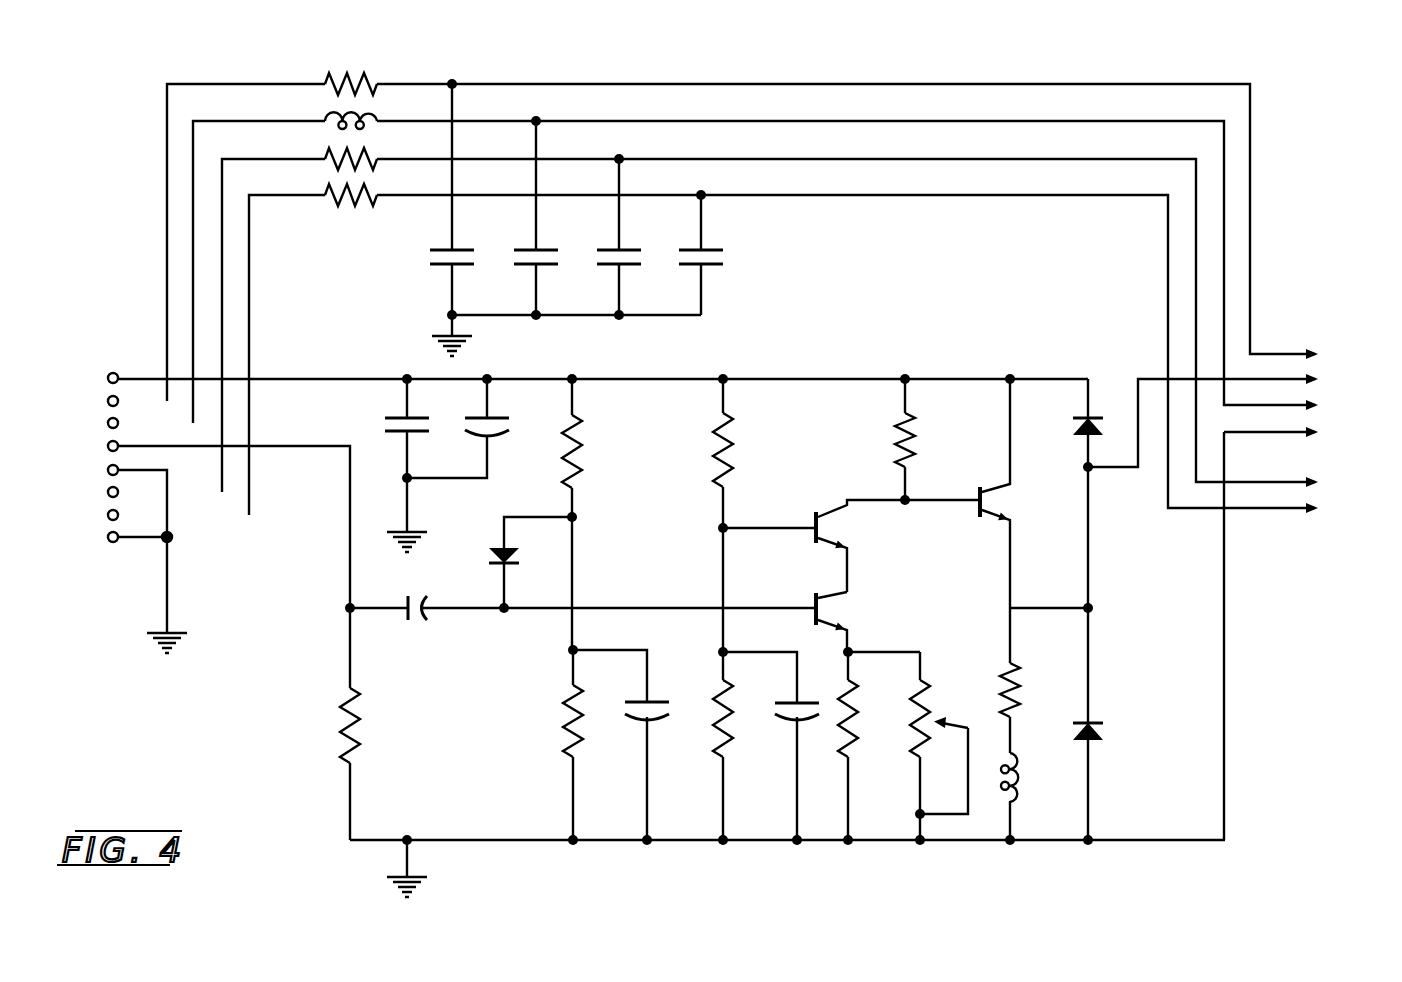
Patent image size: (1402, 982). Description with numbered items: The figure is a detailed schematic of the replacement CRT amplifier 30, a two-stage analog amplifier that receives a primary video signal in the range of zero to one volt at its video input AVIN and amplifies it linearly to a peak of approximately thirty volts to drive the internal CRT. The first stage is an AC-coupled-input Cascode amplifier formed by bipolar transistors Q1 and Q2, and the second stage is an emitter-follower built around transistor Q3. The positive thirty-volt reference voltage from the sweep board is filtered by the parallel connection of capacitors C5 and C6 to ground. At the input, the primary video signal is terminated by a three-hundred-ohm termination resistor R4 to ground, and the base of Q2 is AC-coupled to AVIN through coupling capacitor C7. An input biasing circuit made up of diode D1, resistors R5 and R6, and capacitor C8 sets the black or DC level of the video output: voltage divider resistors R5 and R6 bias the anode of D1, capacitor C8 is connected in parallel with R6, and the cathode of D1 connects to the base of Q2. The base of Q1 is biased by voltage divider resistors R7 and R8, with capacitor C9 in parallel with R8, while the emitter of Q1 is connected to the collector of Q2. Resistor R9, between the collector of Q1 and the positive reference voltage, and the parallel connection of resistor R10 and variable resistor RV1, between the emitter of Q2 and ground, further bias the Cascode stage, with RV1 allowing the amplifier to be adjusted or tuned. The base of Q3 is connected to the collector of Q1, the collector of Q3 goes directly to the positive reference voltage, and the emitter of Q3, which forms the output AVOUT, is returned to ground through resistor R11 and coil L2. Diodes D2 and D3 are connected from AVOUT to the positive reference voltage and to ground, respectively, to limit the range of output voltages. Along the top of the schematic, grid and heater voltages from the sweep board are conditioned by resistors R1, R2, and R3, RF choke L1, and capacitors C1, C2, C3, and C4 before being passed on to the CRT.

The replacement CRT amplifier 30 is at (732, 78).
The resistor R1 is at (741, 231).
The RF choke L1 is at (754, 260).
The resistor R2 is at (768, 314).
The resistor R3 is at (782, 344).
The capacitor C1 is at (446, 199).
The capacitor C2 is at (529, 218).
The capacitor C3 is at (612, 237).
The capacitor C4 is at (694, 255).
The capacitor C5 is at (396, 455).
The capacitor C6 is at (458, 428).
The coupling capacitor C7 is at (583, 622).
The capacitor C8 is at (621, 745).
The capacitor C9 is at (771, 746).
The termination resistor R4 is at (336, 724).
The resistor R5 is at (558, 514).
The resistor R6 is at (559, 745).
The resistor R7 is at (709, 515).
The resistor R8 is at (709, 746).
The resistor R9 is at (888, 439).
The resistor R10 is at (867, 746).
The resistor R11 is at (1030, 699).
The variable resistor RV1 is at (943, 746).
The diode D1 is at (530, 562).
The diode D2 is at (1074, 493).
The diode D3 is at (1100, 724).
The bipolar transistor Q1 is at (851, 536).
The bipolar transistor Q2 is at (854, 611).
The transistor Q3 is at (1016, 521).
The coil L2 is at (1025, 796).